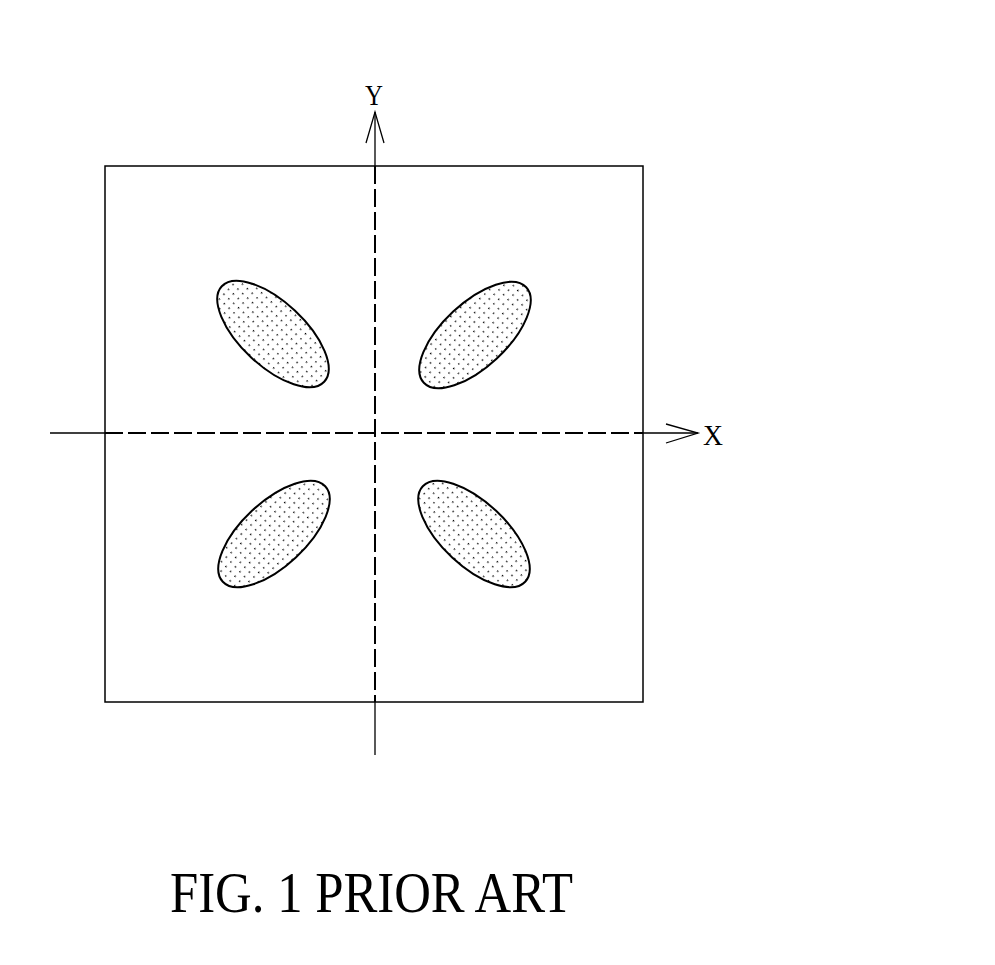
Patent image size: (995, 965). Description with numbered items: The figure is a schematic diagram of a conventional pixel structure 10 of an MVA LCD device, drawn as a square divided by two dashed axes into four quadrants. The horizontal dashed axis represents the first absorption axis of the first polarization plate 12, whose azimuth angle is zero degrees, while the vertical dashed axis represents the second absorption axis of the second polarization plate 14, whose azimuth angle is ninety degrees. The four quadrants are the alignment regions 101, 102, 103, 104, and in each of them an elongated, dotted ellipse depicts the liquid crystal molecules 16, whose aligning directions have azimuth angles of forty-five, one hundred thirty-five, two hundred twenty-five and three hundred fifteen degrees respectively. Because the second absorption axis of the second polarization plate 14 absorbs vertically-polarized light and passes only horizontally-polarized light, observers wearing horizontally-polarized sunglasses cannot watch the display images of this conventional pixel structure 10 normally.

The conventional pixel structure 10 is at (690, 66).
The first polarization plate 12 is at (606, 432).
The second polarization plate 14 is at (375, 202).
The liquid crystal molecules 16 is at (237, 301).
The alignment region 101 is at (611, 228).
The alignment region 102 is at (183, 228).
The alignment region 103 is at (183, 673).
The alignment region 104 is at (611, 673).